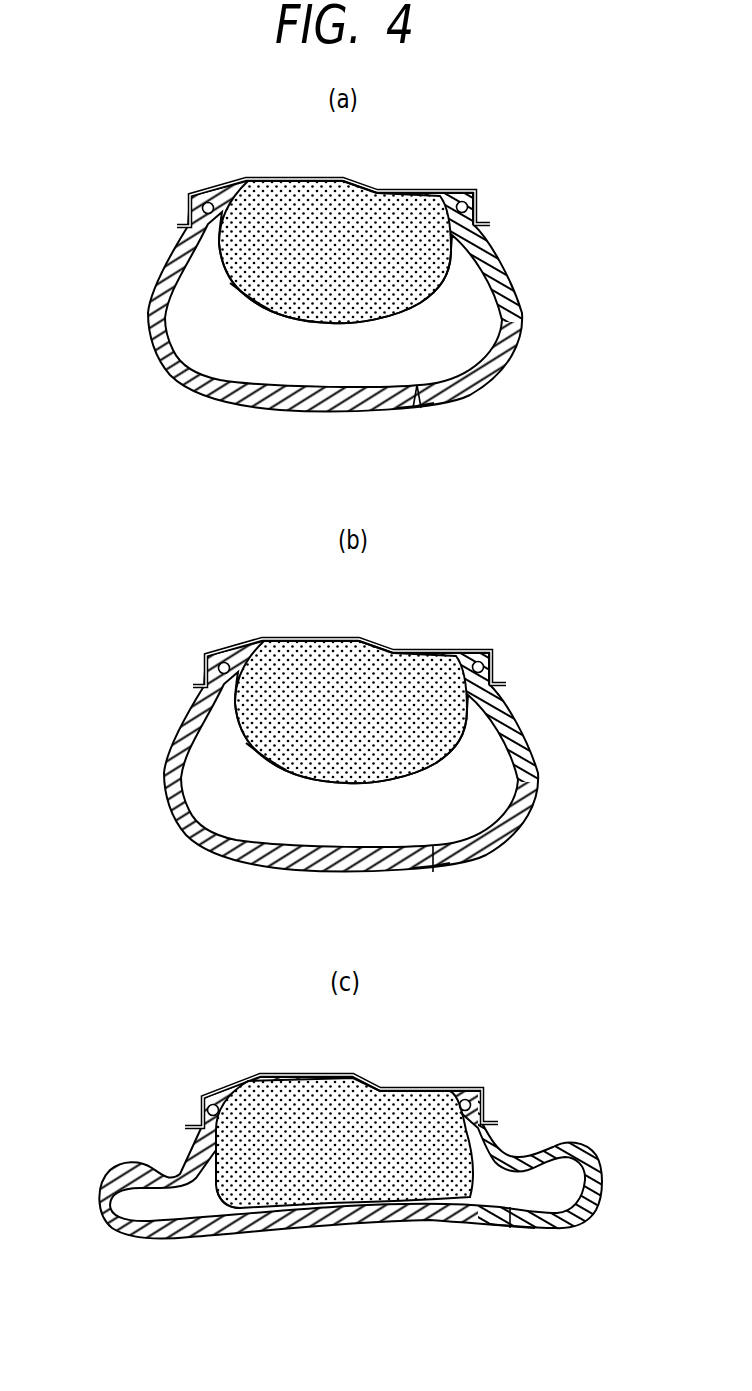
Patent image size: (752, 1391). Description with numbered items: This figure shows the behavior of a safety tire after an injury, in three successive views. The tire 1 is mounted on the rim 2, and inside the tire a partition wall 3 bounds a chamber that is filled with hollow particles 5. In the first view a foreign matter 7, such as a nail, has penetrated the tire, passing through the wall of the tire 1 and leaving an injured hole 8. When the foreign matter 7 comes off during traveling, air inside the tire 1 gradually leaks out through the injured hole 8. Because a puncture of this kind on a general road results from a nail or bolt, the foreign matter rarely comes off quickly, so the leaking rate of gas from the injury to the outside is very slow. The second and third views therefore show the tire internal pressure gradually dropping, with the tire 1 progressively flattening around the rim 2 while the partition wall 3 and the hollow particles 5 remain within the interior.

The tire 1 is at (520, 275).
The rim 2 is at (440, 197).
The partition wall 3 is at (243, 298).
The hollow particle 5 is at (290, 232).
The foreign matter 7 is at (421, 400).
The injured hole 8 is at (418, 408).